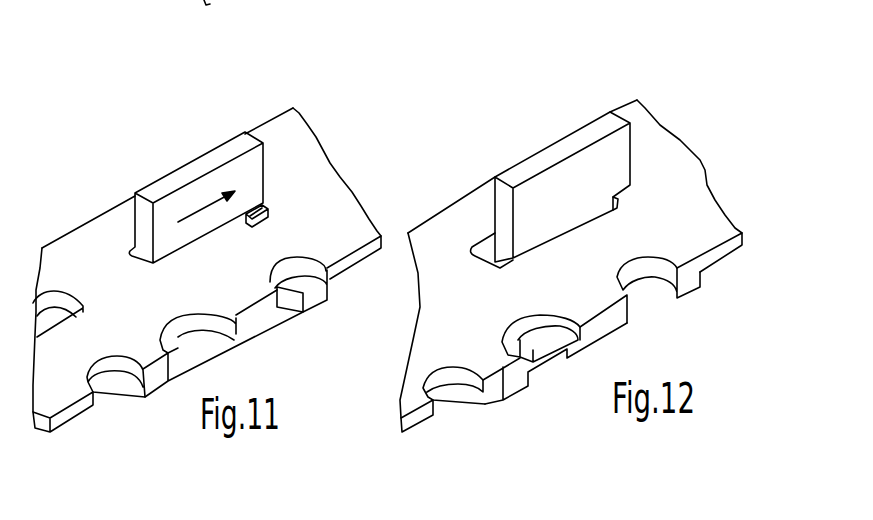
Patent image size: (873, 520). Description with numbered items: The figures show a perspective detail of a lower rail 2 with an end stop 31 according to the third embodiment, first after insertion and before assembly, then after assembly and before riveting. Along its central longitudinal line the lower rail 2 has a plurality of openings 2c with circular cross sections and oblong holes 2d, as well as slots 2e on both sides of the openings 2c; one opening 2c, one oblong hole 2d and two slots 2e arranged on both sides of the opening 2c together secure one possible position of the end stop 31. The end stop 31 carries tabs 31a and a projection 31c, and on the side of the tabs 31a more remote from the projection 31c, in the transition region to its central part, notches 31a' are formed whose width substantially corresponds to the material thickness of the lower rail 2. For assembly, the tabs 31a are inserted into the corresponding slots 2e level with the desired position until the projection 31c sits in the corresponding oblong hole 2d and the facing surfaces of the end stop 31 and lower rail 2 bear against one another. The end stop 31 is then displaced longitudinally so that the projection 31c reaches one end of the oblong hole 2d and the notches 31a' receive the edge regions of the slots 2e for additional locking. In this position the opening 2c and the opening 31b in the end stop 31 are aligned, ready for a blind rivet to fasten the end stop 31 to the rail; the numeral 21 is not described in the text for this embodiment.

In FIG. 11, the lower rail 2 is at (286, 148).
In FIG. 11, the openings 2c is at (312, 270).
In FIG. 11, the oblong holes 2d is at (233, 322).
In FIG. 11, the slots 2e is at (247, 218).
In FIG. 11, the frame part 21 is at (338, 0).
In FIG. 11, the end stop 31 is at (185, 175).
In FIG. 12, the tabs 31a is at (561, 138).
In FIG. 11, the notches 31a' is at (333, 245).
In FIG. 12, the opening 31b is at (650, 289).
In FIG. 12, the projection 31c is at (550, 330).